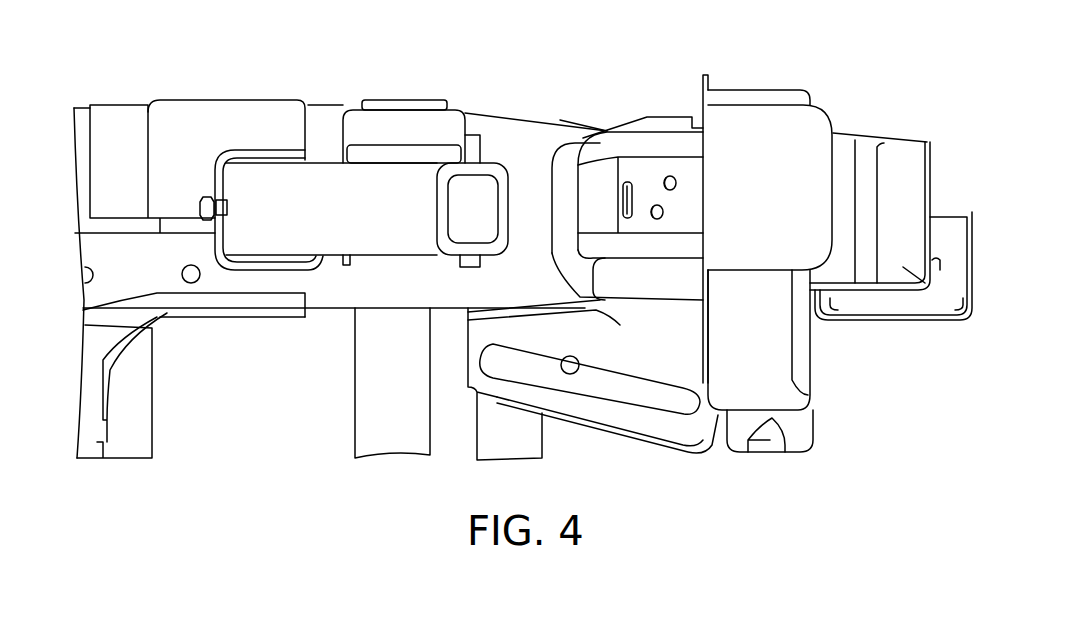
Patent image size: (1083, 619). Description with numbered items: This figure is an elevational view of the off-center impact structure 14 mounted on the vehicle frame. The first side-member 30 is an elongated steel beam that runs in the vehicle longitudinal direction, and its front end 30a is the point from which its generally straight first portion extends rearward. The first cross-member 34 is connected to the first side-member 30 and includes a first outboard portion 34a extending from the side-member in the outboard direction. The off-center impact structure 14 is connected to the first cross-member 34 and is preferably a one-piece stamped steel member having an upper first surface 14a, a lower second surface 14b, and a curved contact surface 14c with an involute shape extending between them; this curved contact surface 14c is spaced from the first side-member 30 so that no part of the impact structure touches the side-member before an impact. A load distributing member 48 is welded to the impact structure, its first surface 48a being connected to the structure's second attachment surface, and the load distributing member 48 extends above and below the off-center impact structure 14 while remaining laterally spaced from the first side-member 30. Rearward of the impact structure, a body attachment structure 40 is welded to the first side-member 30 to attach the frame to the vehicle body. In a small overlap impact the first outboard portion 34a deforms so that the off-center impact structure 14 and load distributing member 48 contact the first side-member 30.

The off-center impact structure 14 is at (568, 200).
The first surface 14a is at (653, 127).
The second surface 14b is at (665, 305).
The curved contact surface 14c is at (580, 220).
The first side-member 30 is at (523, 108).
The front end 30a is at (930, 177).
The first cross-member 34 is at (736, 78).
The first outboard portion 34a is at (772, 137).
The body attachment structure 40 is at (343, 132).
The load distributing member 48 is at (550, 187).
The first surface 48a is at (567, 260).